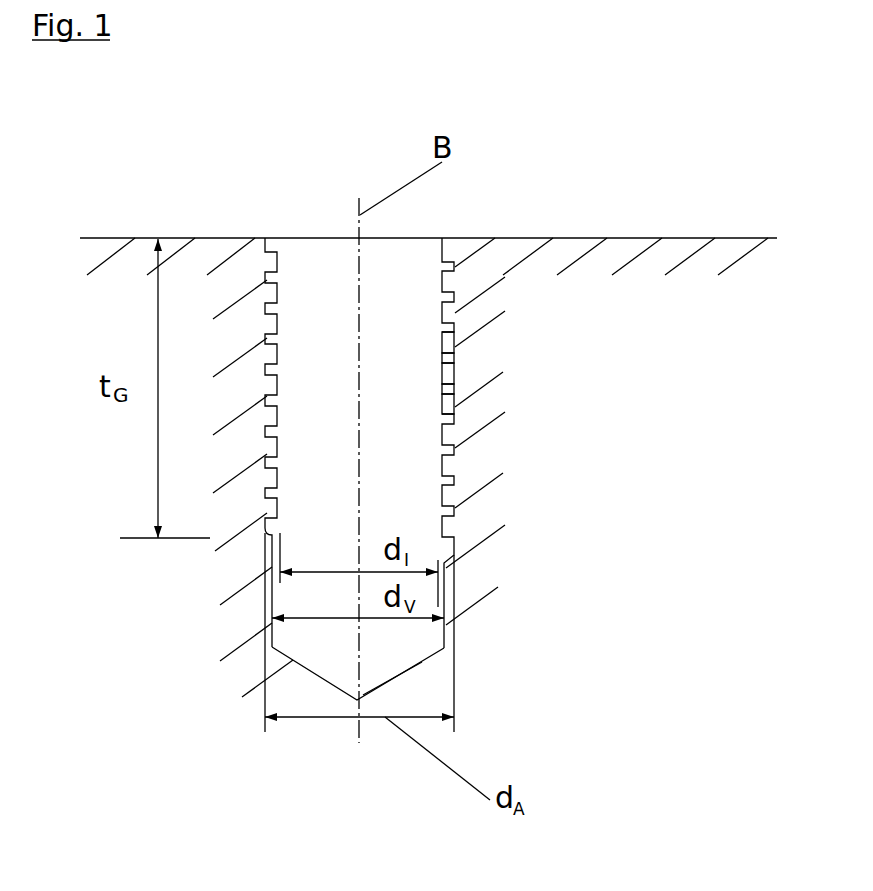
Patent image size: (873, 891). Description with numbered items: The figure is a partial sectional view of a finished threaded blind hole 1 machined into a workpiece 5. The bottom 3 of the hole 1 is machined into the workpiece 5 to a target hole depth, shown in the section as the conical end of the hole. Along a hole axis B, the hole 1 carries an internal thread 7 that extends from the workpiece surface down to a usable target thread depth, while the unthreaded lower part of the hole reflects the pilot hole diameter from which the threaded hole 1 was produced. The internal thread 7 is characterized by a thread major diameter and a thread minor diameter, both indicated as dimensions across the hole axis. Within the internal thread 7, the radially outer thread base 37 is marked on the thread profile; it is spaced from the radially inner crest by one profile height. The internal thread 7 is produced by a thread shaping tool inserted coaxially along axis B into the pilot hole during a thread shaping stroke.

The threaded blind hole 1 is at (428, 366).
The bottom 3 is at (333, 683).
The workpiece 5 is at (132, 238).
The internal thread 7 is at (465, 473).
The thread base 37 is at (455, 355).